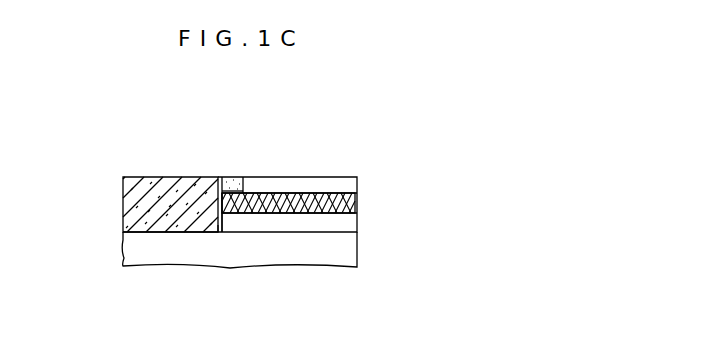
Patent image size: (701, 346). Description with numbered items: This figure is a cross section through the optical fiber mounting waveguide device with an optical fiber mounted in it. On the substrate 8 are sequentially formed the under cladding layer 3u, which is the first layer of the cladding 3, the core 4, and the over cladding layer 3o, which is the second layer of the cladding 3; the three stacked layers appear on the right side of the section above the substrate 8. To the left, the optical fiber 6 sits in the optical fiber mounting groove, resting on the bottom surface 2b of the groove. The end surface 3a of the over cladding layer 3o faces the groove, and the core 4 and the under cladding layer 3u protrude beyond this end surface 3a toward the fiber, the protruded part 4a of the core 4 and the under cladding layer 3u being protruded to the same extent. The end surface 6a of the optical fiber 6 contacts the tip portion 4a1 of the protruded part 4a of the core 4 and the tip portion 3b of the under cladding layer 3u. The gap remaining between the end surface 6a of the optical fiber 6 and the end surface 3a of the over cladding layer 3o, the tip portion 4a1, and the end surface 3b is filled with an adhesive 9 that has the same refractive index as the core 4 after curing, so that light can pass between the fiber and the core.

The cladding 3 is at (370, 171).
The end surface of the over cladding layer 3a is at (258, 183).
The tip portion of the under cladding layer 3b is at (224, 220).
The over cladding layer 3o is at (318, 177).
The under cladding layer 3u is at (320, 222).
The core 4 is at (345, 203).
The protruded part of the core 4a is at (230, 208).
The tip portion of the protruded part of the core 4a1 is at (237, 183).
The optical fiber 6 is at (171, 182).
The end surface of the optical fiber 6a is at (216, 228).
The substrate 8 is at (343, 247).
The adhesive 9 is at (225, 182).
The bottom surface of the optical fiber mounting groove 2b is at (152, 232).